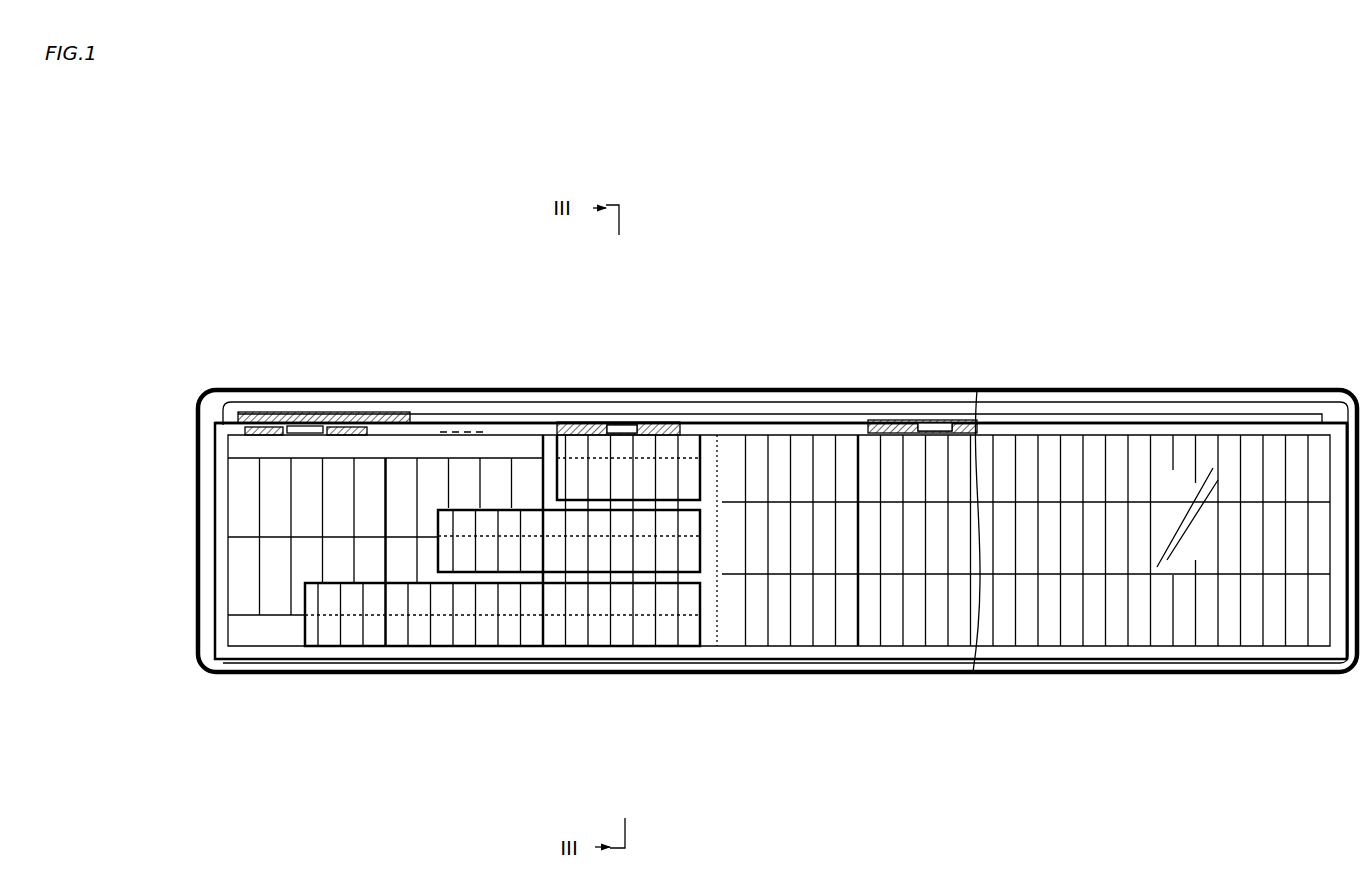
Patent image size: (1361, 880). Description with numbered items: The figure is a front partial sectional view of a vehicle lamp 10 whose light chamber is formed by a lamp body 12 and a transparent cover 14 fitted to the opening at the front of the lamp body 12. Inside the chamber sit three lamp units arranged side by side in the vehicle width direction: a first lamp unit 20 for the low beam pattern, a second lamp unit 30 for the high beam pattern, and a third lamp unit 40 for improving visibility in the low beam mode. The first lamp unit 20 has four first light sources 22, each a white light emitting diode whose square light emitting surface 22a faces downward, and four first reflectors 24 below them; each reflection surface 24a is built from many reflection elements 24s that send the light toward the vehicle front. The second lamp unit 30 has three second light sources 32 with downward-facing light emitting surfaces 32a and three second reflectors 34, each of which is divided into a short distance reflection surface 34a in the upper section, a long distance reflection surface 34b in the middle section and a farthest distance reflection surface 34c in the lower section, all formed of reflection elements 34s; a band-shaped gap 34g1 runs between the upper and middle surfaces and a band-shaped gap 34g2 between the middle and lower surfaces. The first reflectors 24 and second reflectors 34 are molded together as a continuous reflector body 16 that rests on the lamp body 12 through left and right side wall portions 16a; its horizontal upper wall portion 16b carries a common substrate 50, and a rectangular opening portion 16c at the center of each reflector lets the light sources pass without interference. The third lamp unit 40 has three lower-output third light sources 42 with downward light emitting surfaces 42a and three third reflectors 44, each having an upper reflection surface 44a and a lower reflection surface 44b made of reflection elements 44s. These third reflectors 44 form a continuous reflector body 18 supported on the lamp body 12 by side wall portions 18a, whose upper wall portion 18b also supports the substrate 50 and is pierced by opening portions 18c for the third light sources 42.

The vehicle lamp 10 is at (450, 237).
The lamp body 12 is at (270, 389).
The transparent cover 14 is at (1228, 387).
The continuous reflector body 16 is at (878, 660).
The side wall portion 16a is at (1335, 543).
The upper wall portion 16b is at (823, 432).
The opening portion 16c is at (610, 423).
The continuous reflector body 18 is at (257, 623).
The side wall portion 18a is at (223, 528).
The upper wall portion 18b is at (420, 432).
The opening portion 18c is at (294, 424).
The first lamp unit 20 is at (1122, 388).
The first light source 22 is at (785, 434).
The light emitting surface 22a is at (937, 437).
The first reflector 24 is at (805, 652).
The reflection surface 24a is at (1138, 617).
The reflection element 24s is at (1073, 622).
The second lamp unit 30 is at (663, 398).
The second light source 32 is at (628, 432).
The light emitting surface 32a is at (622, 435).
The second reflector 34 is at (350, 649).
The short distance reflection surface 34a is at (572, 432).
The long distance reflection surface 34b is at (483, 530).
The farthest distance reflection surface 34c is at (355, 608).
The band-shaped gap 34g1 is at (690, 504).
The band-shaped gap 34g2 is at (700, 579).
The reflection element 34s is at (641, 632).
The third lamp unit 40 is at (375, 410).
The third light source 42 is at (318, 442).
The light emitting surface 42a is at (305, 438).
The third reflector 44 is at (283, 620).
The upper reflection surface 44a is at (238, 502).
The lower reflection surface 44b is at (242, 567).
The reflection element 44s is at (273, 585).
The substrate 50 is at (753, 398).